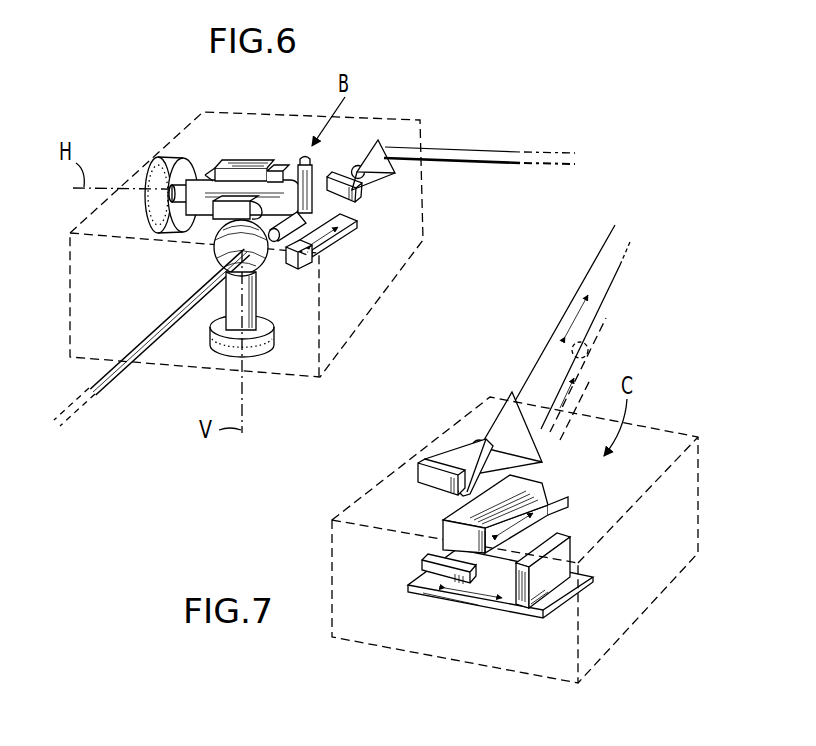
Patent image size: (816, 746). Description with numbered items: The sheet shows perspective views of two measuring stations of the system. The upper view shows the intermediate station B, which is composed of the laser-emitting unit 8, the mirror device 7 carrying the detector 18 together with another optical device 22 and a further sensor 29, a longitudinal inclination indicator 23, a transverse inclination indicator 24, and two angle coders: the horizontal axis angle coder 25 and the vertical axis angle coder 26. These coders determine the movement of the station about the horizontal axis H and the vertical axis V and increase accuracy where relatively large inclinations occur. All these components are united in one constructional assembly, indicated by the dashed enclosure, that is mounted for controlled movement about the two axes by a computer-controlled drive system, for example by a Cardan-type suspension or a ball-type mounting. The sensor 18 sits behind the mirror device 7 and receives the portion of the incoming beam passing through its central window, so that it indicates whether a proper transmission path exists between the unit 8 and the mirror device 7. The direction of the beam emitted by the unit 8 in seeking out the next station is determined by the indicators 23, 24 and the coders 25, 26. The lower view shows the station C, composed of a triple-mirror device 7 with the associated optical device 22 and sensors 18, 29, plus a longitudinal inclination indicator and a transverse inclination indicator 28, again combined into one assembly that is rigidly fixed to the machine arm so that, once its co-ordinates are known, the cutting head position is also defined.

In FIG. 6, the mirror device 7 is at (388, 148).
In FIG. 7, the mirror device 7 is at (521, 440).
In FIG. 6, the unit 8 is at (278, 254).
In FIG. 6, the sensor 18 is at (366, 178).
In FIG. 7, the sensor 18 is at (477, 440).
In FIG. 6, the optical device 22 is at (354, 200).
In FIG. 7, the optical device 22 is at (455, 456).
In FIG. 6, the longitudinal inclination indicator 23 is at (300, 253).
In FIG. 6, the transverse inclination indicator 24 is at (230, 160).
In FIG. 6, the horizontal axis angle coder 25 is at (168, 159).
In FIG. 6, the vertical axis angle coder 26 is at (276, 342).
In FIG. 7, the transverse inclination indicator 28 is at (560, 553).
In FIG. 6, the sensor 29 is at (348, 224).
In FIG. 7, the sensor 29 is at (418, 475).